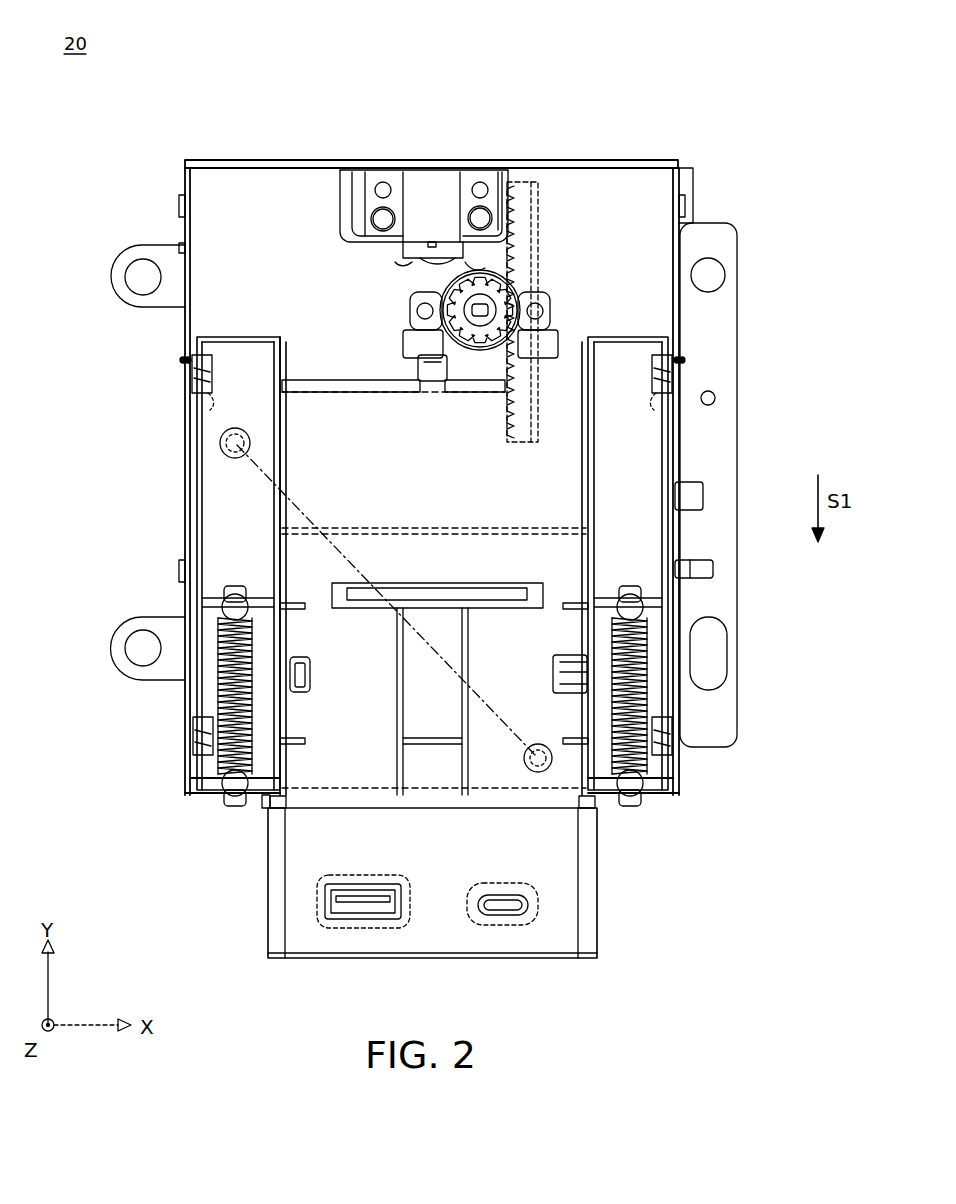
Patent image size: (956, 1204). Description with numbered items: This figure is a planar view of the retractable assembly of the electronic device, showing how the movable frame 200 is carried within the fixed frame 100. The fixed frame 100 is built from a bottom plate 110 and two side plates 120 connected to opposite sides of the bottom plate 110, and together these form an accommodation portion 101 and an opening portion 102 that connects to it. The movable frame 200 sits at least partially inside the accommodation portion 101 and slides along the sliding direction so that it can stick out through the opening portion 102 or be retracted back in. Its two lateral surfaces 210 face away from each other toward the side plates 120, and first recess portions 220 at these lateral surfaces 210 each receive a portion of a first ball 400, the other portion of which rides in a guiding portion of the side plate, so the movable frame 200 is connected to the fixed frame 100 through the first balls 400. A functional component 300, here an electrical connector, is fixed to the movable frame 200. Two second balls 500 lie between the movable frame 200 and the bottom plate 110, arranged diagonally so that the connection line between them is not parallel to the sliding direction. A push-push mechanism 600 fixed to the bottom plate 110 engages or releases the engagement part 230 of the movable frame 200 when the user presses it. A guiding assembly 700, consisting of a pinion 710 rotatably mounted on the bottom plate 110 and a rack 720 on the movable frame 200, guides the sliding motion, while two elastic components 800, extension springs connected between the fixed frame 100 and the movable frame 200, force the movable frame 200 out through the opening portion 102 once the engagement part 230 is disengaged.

The fixed frame 100 is at (722, 186).
The accommodation portion 101 is at (271, 227).
The opening portion 102 is at (264, 802).
The bottom plate 110 is at (632, 310).
The side plate 120 is at (703, 190).
The movable frame 200 is at (530, 849).
The lateral surface 210 is at (180, 360).
The first recess portion 220 is at (206, 402).
The engagement part 230 is at (418, 375).
The functional component 300 is at (362, 904).
The first ball 400 is at (212, 362).
The second ball 500 is at (530, 766).
The push-push mechanism 600 is at (430, 205).
The guiding assembly 700 is at (528, 224).
The pinion 710 is at (488, 298).
The rack 720 is at (530, 227).
The elastic component 800 is at (218, 700).